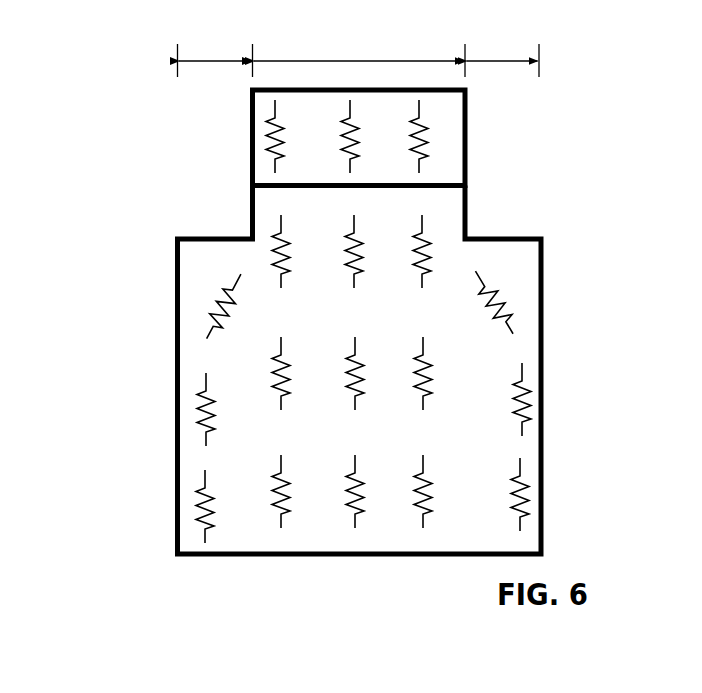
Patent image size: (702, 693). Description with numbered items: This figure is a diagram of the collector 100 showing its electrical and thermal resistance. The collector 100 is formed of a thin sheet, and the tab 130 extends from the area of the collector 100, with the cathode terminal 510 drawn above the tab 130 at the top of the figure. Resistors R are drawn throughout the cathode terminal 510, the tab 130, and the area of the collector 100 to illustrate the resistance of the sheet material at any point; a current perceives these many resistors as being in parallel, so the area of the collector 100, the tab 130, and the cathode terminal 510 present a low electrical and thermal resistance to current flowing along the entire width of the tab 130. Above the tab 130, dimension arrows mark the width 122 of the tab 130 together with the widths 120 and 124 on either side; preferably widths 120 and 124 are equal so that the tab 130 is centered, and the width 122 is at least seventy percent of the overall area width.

The collector 100 is at (108, 66).
The width 120 is at (213, 60).
The width 122 is at (360, 60).
The width 124 is at (503, 60).
The tab 130 is at (468, 217).
The cathode terminal 510 is at (468, 130).